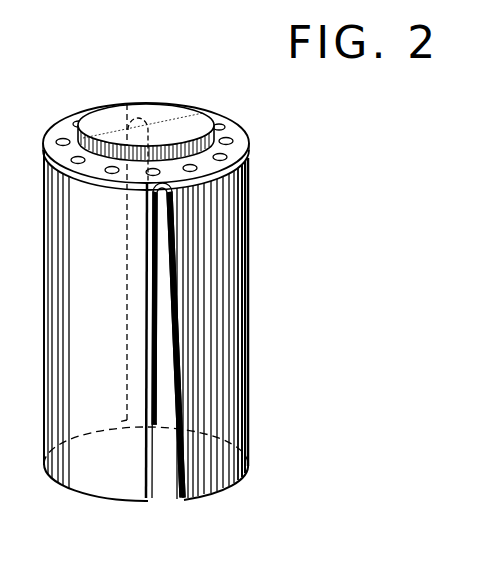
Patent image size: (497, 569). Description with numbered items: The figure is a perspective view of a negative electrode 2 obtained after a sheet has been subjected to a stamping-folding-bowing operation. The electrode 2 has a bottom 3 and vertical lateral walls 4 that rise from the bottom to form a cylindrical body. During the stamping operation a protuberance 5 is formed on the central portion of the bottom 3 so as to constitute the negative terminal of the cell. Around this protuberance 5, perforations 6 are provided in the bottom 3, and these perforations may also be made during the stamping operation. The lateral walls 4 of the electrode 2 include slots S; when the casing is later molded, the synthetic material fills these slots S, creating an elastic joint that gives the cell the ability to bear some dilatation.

The electrode 2 is at (248, 339).
The bottom 3 is at (228, 125).
The vertical lateral walls 4 is at (221, 386).
The protuberance 5 is at (175, 132).
The perforations 6 is at (63, 139).
The slots S is at (150, 425).